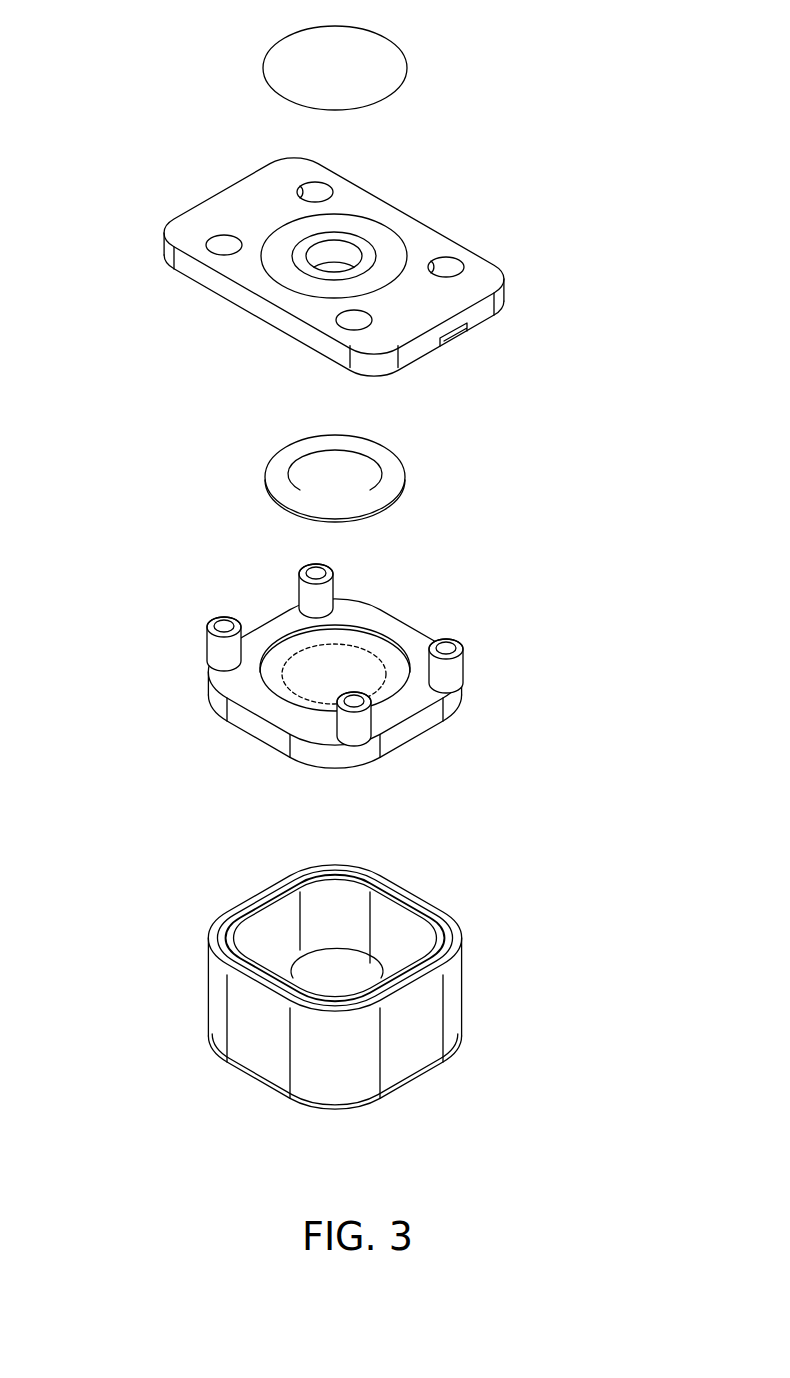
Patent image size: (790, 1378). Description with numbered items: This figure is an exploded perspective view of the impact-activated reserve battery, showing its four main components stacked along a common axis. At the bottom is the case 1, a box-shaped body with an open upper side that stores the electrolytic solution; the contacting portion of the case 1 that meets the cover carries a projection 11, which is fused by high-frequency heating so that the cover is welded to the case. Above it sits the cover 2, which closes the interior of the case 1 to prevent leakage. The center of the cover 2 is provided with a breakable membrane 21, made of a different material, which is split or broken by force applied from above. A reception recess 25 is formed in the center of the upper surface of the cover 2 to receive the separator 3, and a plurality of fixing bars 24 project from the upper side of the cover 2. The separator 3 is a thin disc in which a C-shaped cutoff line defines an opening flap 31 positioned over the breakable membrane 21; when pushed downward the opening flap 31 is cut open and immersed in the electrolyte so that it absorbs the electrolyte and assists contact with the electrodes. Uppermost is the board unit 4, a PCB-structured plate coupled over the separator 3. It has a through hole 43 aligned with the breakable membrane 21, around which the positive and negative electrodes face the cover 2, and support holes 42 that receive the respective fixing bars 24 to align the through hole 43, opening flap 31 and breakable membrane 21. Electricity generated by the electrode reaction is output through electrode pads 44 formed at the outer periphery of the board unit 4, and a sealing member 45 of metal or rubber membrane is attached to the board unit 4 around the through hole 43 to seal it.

The case 1 is at (432, 1022).
The projection 11 is at (428, 915).
The cover 2 is at (453, 720).
The breakable membrane 21 is at (313, 672).
The fixing bars 24 is at (450, 668).
The reception recess 25 is at (382, 647).
The separator 3 is at (403, 480).
The opening flap 31 is at (365, 478).
The board unit 4 is at (503, 287).
The support holes 42 is at (445, 267).
The through hole 43 is at (352, 250).
The electrode pads 44 is at (460, 337).
The sealing member 45 is at (370, 61).